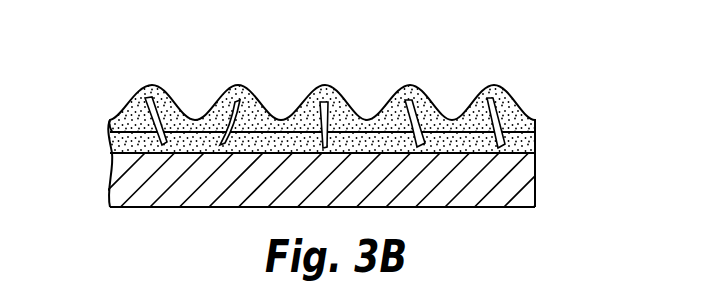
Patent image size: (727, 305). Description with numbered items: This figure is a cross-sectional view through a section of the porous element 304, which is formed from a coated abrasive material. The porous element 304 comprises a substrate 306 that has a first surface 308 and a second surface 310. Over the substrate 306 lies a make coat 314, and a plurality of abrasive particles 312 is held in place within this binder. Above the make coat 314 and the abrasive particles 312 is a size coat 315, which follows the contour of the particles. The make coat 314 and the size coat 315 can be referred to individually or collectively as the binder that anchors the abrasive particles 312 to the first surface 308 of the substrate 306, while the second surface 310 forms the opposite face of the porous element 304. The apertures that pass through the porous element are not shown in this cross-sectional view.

The porous element 304 is at (492, 53).
The substrate 306 is at (117, 183).
The first surface 308 is at (506, 145).
The second surface 310 is at (518, 208).
The abrasive particles 312 is at (403, 103).
The make coat 314 is at (110, 140).
The size coat 315 is at (130, 113).